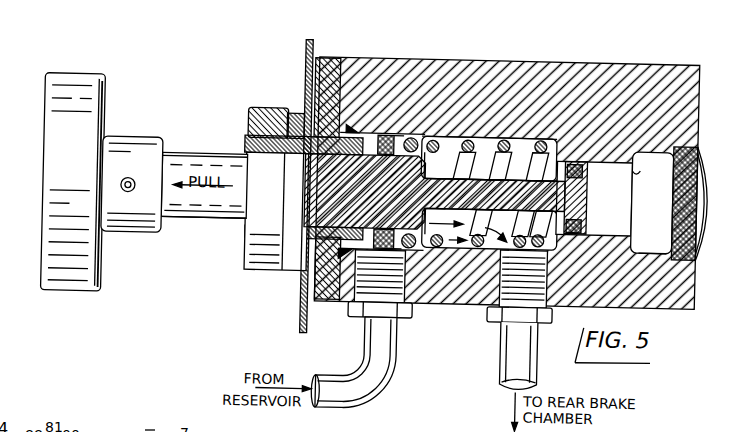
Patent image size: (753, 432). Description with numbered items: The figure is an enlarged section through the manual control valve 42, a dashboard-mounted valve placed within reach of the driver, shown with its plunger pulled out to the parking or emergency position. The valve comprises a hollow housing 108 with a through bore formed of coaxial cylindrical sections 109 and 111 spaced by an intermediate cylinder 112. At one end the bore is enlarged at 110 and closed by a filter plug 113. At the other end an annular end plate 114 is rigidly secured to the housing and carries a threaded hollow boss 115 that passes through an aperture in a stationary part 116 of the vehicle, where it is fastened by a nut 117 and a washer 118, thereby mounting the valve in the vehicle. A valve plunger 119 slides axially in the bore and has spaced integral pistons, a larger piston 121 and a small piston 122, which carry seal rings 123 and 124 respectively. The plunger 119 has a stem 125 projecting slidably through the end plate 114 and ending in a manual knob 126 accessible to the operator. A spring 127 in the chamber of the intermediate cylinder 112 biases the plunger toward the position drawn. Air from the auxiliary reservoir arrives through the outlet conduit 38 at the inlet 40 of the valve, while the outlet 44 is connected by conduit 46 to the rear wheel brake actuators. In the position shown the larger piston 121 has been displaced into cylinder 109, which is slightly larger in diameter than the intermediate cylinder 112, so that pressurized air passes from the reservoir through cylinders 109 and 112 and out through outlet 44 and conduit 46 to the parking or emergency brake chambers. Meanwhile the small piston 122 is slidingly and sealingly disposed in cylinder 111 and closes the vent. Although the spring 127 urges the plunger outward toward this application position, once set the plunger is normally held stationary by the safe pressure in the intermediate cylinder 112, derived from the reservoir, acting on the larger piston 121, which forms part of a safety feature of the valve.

The manual control valve 42 is at (550, 57).
The annular end plate 114 is at (325, 62).
The stationary part of the vehicle 116 is at (303, 61).
The nut 117 is at (265, 113).
The washer 118 is at (298, 118).
The threaded hollow boss 115 is at (246, 160).
The stem 125 is at (222, 226).
The manual knob 126 is at (75, 301).
The larger piston 121 is at (384, 137).
The seal ring 123 is at (394, 136).
The cylindrical section 109 is at (409, 139).
The hollow housing 108 is at (445, 141).
The valve plunger 119 is at (438, 140).
The intermediate cylinder 112 is at (460, 138).
The spring 127 is at (492, 138).
The seal ring 124 is at (582, 183).
The small piston 122 is at (571, 162).
The cylindrical section 111 is at (633, 170).
The filter plug 113 is at (700, 173).
The enlarged bore end 110 is at (658, 251).
The inlet 40 is at (415, 306).
The outlet conduit 38 is at (401, 364).
The outlet 44 is at (492, 311).
The conduit 46 is at (505, 352).